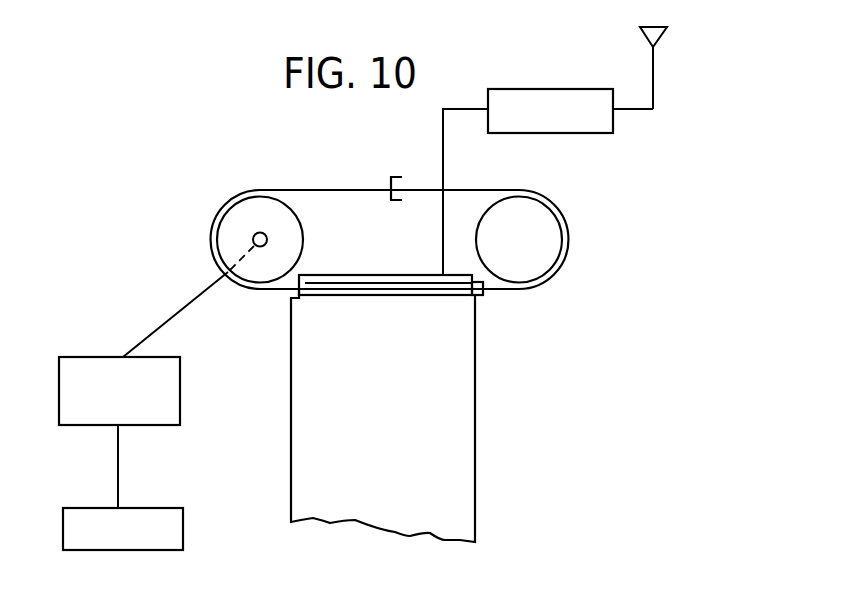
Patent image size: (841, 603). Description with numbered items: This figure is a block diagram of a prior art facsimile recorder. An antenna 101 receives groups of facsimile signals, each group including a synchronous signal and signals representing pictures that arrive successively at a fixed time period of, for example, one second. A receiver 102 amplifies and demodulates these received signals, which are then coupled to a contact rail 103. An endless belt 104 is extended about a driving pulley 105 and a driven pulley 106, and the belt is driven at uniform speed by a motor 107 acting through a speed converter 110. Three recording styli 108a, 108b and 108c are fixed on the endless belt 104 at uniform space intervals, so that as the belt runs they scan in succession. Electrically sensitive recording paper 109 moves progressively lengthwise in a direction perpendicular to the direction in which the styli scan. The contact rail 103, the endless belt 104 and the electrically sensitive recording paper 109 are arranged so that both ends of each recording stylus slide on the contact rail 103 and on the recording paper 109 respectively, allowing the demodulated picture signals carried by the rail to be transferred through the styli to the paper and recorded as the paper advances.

The antenna 101 is at (662, 33).
The receiver 102 is at (607, 89).
The contact rail 103 is at (352, 275).
The endless belt 104 is at (374, 190).
The driving pulley 105 is at (233, 193).
The driven pulley 106 is at (570, 240).
The motor 107 is at (183, 512).
The recording stylus 108a is at (288, 298).
The recording stylus 108b is at (484, 292).
The recording stylus 108c is at (402, 177).
The electrically sensitive recording paper 109 is at (475, 420).
The speed converter 110 is at (182, 383).